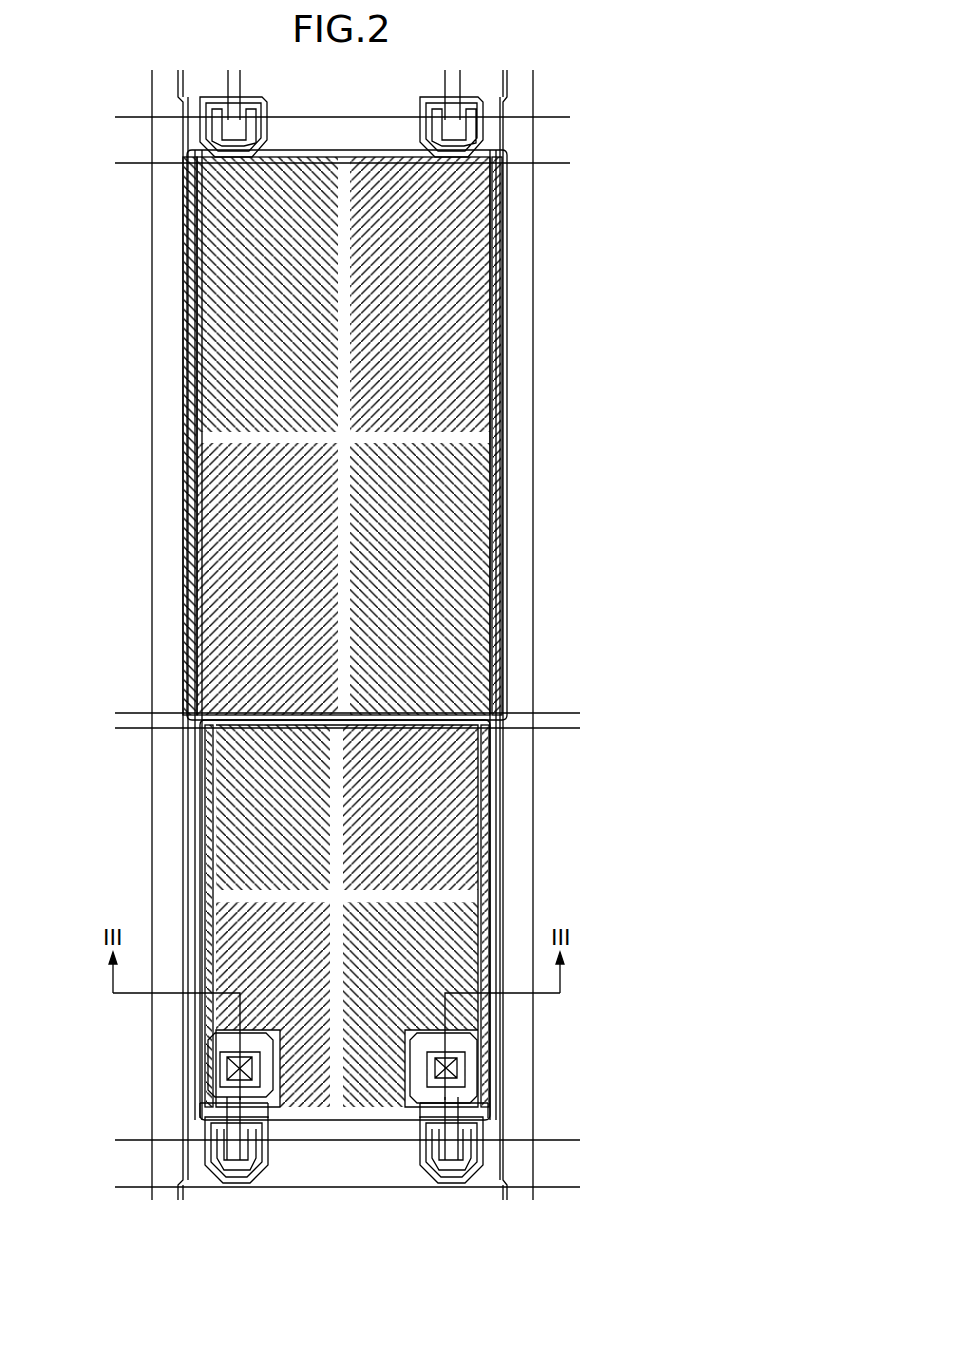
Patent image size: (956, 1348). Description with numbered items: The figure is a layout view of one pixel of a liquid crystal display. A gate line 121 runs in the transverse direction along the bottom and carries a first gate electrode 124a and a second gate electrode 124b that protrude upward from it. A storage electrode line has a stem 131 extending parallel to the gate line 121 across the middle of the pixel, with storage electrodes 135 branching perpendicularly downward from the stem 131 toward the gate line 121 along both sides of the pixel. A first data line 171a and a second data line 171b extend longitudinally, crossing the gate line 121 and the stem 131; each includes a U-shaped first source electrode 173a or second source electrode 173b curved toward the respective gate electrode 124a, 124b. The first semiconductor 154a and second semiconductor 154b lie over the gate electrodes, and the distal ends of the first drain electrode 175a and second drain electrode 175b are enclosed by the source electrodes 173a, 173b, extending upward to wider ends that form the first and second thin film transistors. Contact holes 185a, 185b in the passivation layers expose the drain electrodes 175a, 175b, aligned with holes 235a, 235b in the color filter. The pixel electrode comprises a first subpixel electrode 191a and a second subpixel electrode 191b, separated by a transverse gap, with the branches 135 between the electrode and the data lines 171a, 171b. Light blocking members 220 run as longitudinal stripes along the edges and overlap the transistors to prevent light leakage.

The light blocking member 220 is at (533, 248).
The second subpixel electrode 191b is at (490, 425).
The first subpixel electrode 191a is at (478, 745).
The stem 131 is at (535, 712).
The storage electrode 135 is at (200, 772).
The second data line 171b is at (195, 865).
The first data line 171a is at (503, 880).
The second drain electrode 175b is at (215, 1040).
The second contact hole 185b is at (220, 1062).
The second hole 235b is at (227, 1070).
The first contact hole 185a is at (465, 1060).
The first hole 235a is at (457, 1072).
The first drain electrode 175a is at (470, 1103).
The gate line 121 is at (560, 1135).
The second semiconductor 154b is at (222, 1183).
The second source electrode 173b is at (258, 1177).
The second gate electrode 124b is at (290, 1183).
The first gate electrode 124a is at (405, 1183).
The first source electrode 173a is at (440, 1177).
The first semiconductor 154a is at (468, 1183).